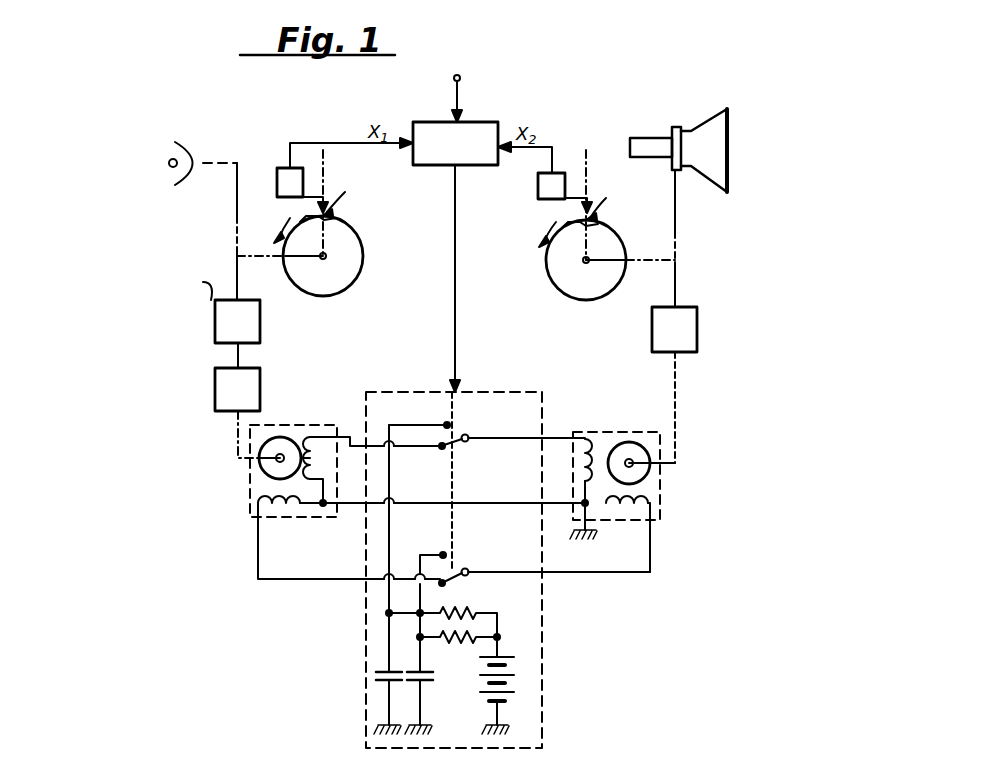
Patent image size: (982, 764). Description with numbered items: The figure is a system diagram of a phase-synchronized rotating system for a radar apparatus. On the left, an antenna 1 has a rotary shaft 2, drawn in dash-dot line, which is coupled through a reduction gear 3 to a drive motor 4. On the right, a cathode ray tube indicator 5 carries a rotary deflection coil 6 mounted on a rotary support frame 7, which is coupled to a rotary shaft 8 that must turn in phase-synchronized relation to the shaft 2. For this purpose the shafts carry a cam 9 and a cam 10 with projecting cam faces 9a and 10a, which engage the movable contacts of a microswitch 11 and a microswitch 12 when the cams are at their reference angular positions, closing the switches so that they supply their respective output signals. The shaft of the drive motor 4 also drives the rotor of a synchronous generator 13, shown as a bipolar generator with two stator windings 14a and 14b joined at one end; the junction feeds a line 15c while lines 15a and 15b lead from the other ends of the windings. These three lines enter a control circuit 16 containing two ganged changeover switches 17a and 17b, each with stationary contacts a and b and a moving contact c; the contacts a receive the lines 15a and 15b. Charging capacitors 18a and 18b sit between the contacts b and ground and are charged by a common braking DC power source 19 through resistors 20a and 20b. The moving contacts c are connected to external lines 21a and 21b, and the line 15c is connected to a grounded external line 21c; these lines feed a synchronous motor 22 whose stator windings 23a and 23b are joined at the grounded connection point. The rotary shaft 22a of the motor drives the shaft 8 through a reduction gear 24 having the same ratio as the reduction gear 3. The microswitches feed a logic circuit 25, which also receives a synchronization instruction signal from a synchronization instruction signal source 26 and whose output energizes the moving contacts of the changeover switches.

The antenna 1 is at (203, 150).
The rotary shaft 2 is at (246, 231).
The reduction gear 3 is at (141, 306).
The drive motor 4 is at (152, 377).
The cathode ray tube indicator 5 is at (704, 136).
The rotary deflection coil 6 is at (680, 131).
The rotary support frame 7 is at (651, 131).
The rotary shaft 8 is at (662, 238).
The cam 9 is at (333, 218).
The cam face 9a is at (335, 200).
The cam 10 is at (566, 222).
The cam face 10a is at (604, 204).
The microswitch 11 is at (288, 190).
The microswitch 12 is at (549, 193).
The synchronous generator 13 is at (293, 457).
The stator winding 14a is at (336, 471).
The stator winding 14b is at (279, 523).
The line 15a is at (375, 423).
The line 15b is at (326, 558).
The line 15c is at (347, 524).
The control circuit 16 is at (454, 555).
The changeover switch 17a is at (460, 480).
The changeover switch 17b is at (444, 603).
The charging capacitor 18a is at (362, 699).
The charging capacitor 18b is at (437, 703).
The braking DC power source 19 is at (509, 685).
The resistor 20a is at (441, 610).
The resistor 20b is at (458, 652).
The external line 21a is at (526, 455).
The external line 21b is at (559, 587).
The external line 21c is at (489, 519).
The synchronous motor 22 is at (616, 460).
The rotary shaft 22a is at (685, 407).
The stator winding 23a is at (576, 469).
The stator winding 23b is at (628, 534).
The reduction gear 24 is at (767, 329).
The logic circuit 25 is at (384, 124).
The synchronization instruction signal source 26 is at (471, 88).